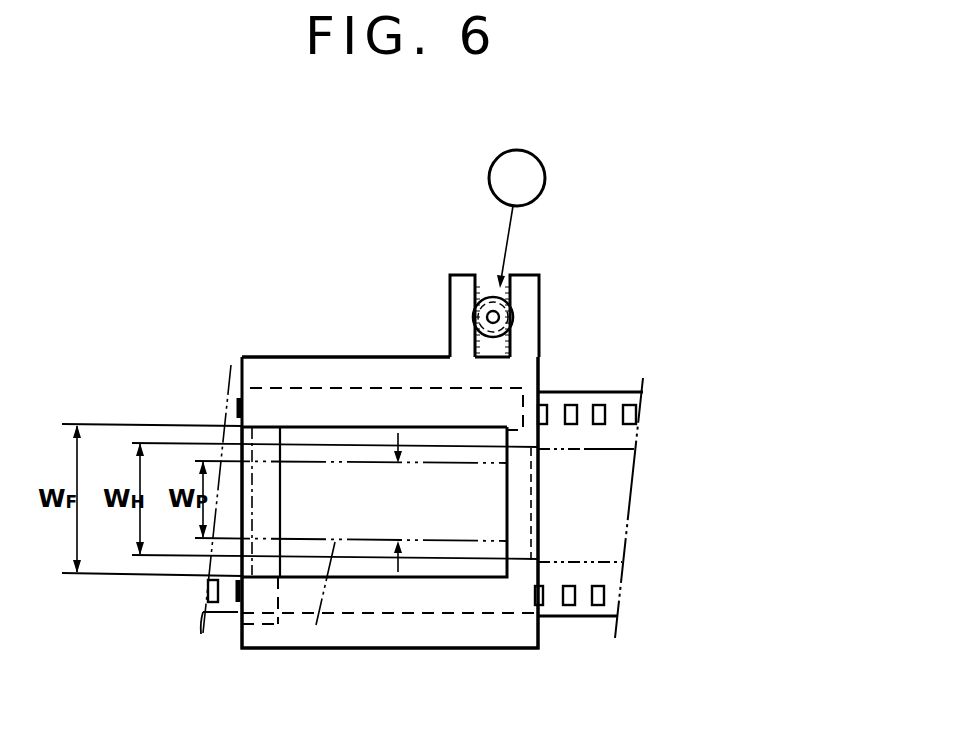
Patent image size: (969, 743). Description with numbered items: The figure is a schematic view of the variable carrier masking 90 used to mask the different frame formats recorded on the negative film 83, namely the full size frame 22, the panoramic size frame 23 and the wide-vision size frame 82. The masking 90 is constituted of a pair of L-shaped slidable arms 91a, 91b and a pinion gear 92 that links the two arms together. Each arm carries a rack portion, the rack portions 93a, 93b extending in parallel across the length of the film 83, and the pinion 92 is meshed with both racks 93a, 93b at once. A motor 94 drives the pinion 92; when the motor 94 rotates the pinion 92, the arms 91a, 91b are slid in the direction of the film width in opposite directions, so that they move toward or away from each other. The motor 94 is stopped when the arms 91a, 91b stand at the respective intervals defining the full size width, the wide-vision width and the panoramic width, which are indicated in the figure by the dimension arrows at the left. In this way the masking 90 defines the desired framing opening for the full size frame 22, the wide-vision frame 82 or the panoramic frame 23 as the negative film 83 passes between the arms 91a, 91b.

The variable carrier masking 90 is at (320, 228).
The L-shaped slidable arm 91a is at (280, 365).
The L-shaped slidable arm 91b is at (407, 640).
The pinion gear 92 is at (489, 294).
The rack portion 93a is at (465, 288).
The rack portion 93b is at (527, 283).
The motor 94 is at (540, 159).
The wide-vision size frame 82 is at (587, 450).
The full size frame 22 is at (240, 426).
The negative film 83 is at (222, 613).
The panoramic size frame 23 is at (316, 625).